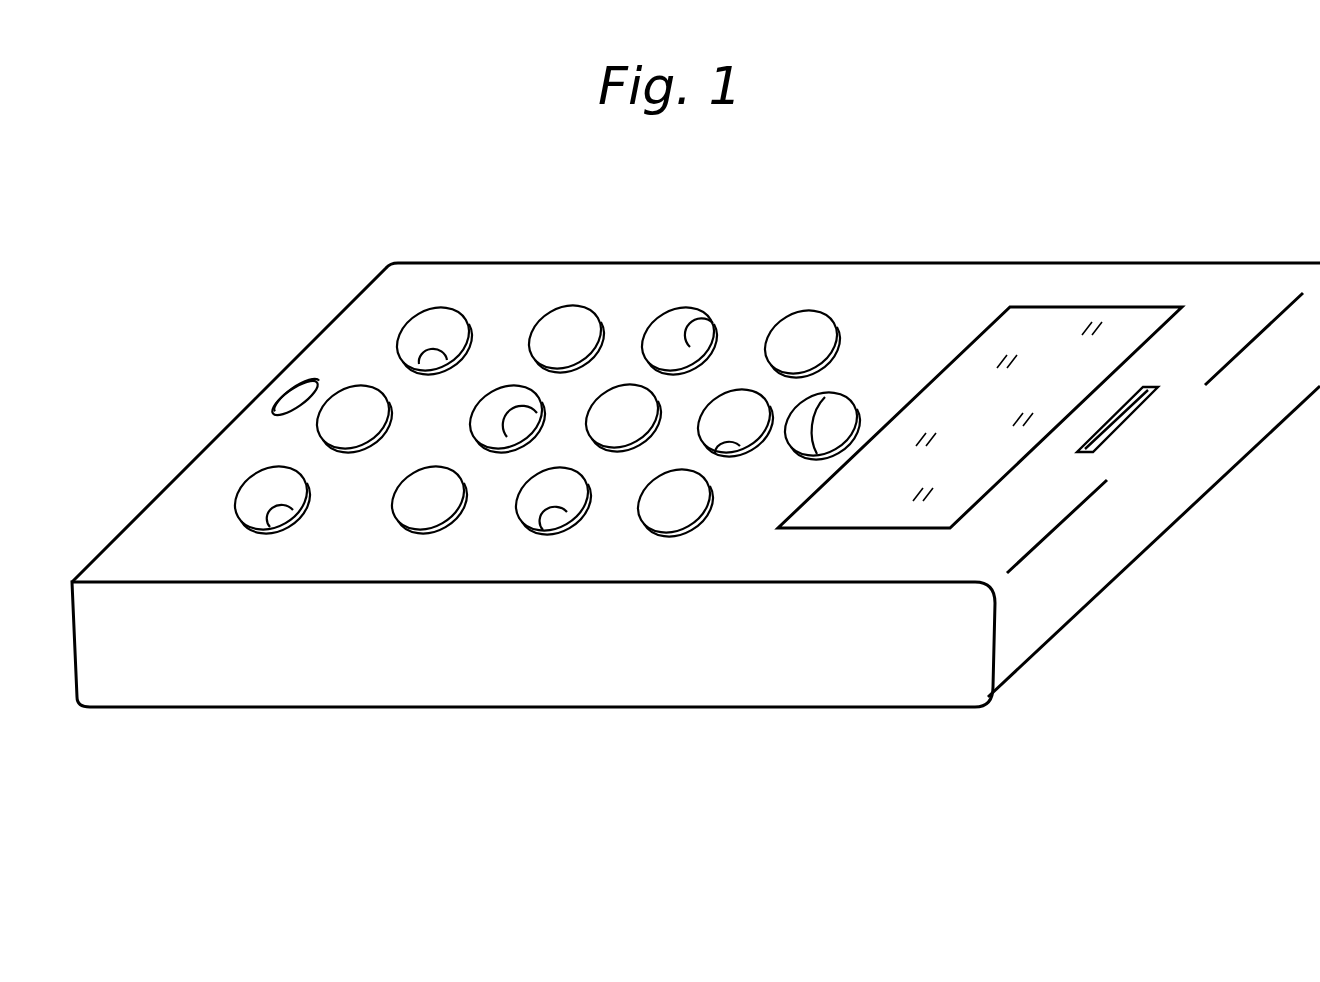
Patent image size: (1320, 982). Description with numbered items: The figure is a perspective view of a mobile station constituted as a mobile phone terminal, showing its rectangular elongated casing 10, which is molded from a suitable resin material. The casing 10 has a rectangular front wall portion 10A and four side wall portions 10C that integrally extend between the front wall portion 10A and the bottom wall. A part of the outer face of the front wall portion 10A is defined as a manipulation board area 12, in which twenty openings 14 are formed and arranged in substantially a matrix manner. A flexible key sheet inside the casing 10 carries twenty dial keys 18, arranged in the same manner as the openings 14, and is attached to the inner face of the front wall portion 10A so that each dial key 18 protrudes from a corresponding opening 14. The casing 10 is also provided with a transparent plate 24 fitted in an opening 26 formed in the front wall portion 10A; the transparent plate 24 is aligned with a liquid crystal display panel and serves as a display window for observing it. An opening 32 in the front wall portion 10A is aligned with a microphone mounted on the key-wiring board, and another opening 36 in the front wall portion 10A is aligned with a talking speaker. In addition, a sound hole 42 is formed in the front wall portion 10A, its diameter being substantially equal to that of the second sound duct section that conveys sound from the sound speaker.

The elongated casing 10 is at (657, 262).
The front wall portion 10A is at (890, 290).
The side wall portions 10C is at (1130, 533).
The manipulation board area 12 is at (468, 543).
The openings 14 is at (702, 326).
The dial keys 18 is at (868, 323).
The transparent plate 24 is at (1003, 419).
The opening 26 is at (1075, 407).
The opening 32 is at (298, 403).
The opening 36 is at (1112, 430).
The sound hole 42 is at (845, 405).